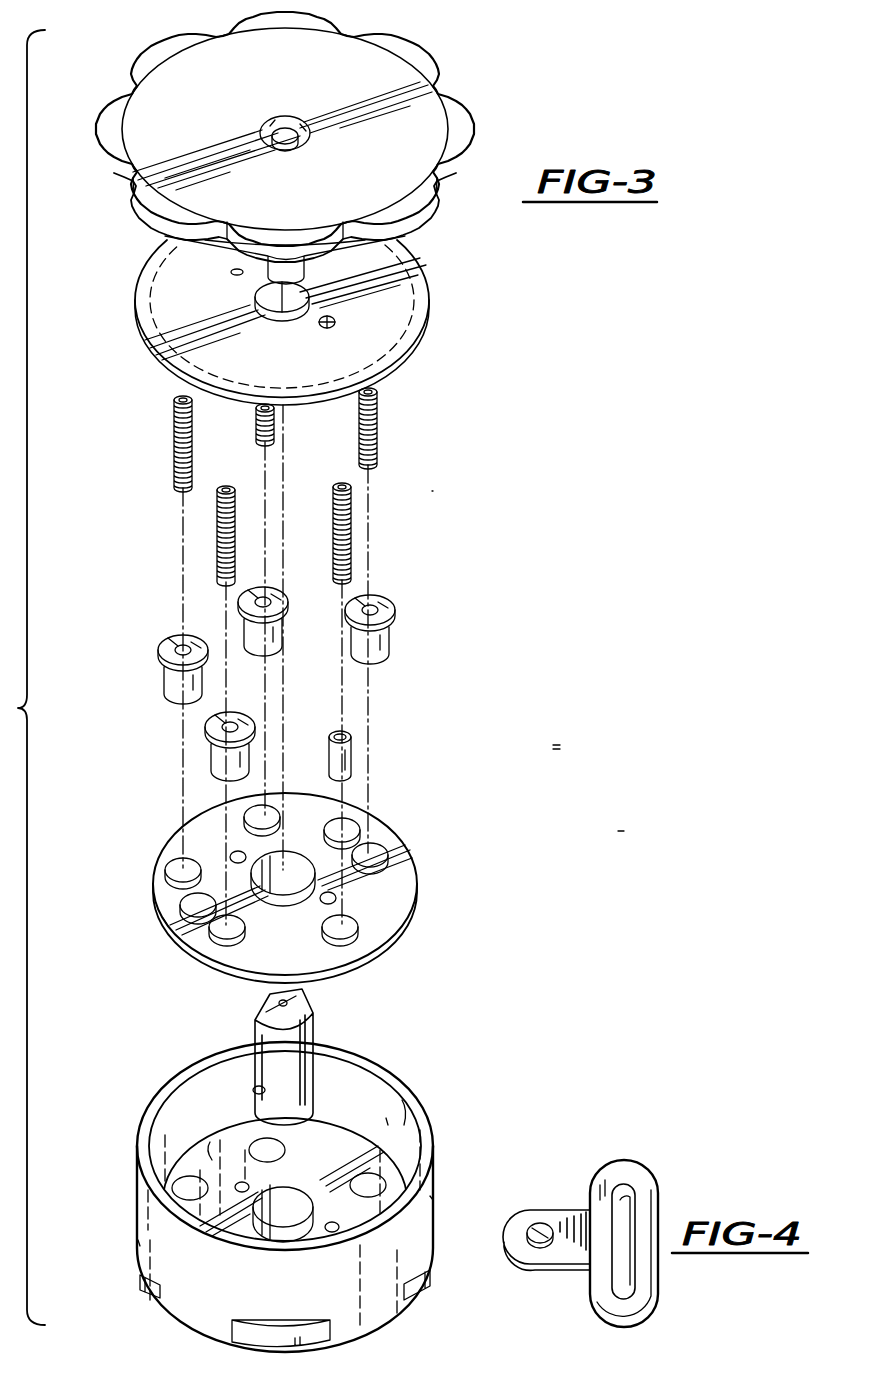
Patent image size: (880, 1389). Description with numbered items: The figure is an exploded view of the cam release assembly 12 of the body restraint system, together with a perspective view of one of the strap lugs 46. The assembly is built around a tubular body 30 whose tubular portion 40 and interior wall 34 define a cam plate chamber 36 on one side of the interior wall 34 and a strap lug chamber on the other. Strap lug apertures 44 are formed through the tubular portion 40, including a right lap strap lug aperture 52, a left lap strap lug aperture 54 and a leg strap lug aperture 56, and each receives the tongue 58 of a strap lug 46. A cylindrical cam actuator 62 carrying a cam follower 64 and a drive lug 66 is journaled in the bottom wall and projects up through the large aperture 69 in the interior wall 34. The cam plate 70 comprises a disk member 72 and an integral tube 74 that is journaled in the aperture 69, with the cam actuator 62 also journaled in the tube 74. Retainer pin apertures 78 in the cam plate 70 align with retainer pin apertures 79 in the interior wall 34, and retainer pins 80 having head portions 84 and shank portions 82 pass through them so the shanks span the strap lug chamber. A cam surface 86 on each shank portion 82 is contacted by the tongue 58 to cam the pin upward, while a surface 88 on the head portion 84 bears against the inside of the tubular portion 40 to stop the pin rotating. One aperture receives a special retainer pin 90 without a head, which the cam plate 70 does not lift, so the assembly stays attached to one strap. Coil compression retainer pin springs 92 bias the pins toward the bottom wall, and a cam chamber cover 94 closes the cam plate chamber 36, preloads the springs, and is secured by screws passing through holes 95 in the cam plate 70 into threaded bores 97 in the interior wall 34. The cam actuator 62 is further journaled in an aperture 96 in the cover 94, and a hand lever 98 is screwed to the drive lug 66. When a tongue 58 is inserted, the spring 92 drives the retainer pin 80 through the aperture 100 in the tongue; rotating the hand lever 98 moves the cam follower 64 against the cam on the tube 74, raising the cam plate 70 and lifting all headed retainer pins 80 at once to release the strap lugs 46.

In FIG. 3, the cam release assembly 12 is at (432, 491).
In FIG. 3, the tubular body 30 is at (444, 1127).
In FIG. 3, the interior wall 34 is at (210, 1142).
In FIG. 3, the cam plate chamber 36 is at (402, 1100).
In FIG. 3, the tubular portion 40 is at (430, 1196).
In FIG. 3, the strap lug apertures 44 is at (138, 1240).
In FIG. 4, the strap lug 46 is at (642, 1172).
In FIG. 3, the right lap strap lug aperture 52 is at (140, 1288).
In FIG. 3, the left lap strap lug aperture 54 is at (412, 1296).
In FIG. 3, the leg strap lug aperture 56 is at (230, 1326).
In FIG. 4, the tongue 58 is at (572, 1266).
In FIG. 3, the cylindrical cam actuator 62 is at (256, 1046).
In FIG. 3, the cam follower 64 is at (252, 1088).
In FIG. 3, the drive lug 66 is at (268, 1004).
In FIG. 3, the large aperture 69 is at (268, 1196).
In FIG. 3, the cam plate 70 is at (152, 880).
In FIG. 3, the disk member 72 is at (180, 924).
In FIG. 3, the integral tube 74 is at (388, 856).
In FIG. 3, the retainer pin apertures 78 is at (178, 872).
In FIG. 3, the retainer pin apertures 79 is at (386, 1118).
In FIG. 3, the retainer pin 80 is at (398, 634).
In FIG. 3, the shank portion 82 is at (388, 656).
In FIG. 3, the head portion 84 is at (388, 605).
In FIG. 3, the cam surface 86 is at (222, 773).
In FIG. 3, the surface 88 is at (178, 646).
In FIG. 3, the special retainer pin 90 is at (354, 771).
In FIG. 3, the retainer pin spring 92 is at (174, 444).
In FIG. 3, the cam chamber cover 94 is at (420, 302).
In FIG. 3, the holes 95 is at (286, 876).
In FIG. 3, the aperture 96 is at (252, 299).
In FIG. 3, the threaded bores 97 is at (234, 1187).
In FIG. 3, the hand lever 98 is at (428, 108).
In FIG. 4, the aperture 100 is at (545, 1224).